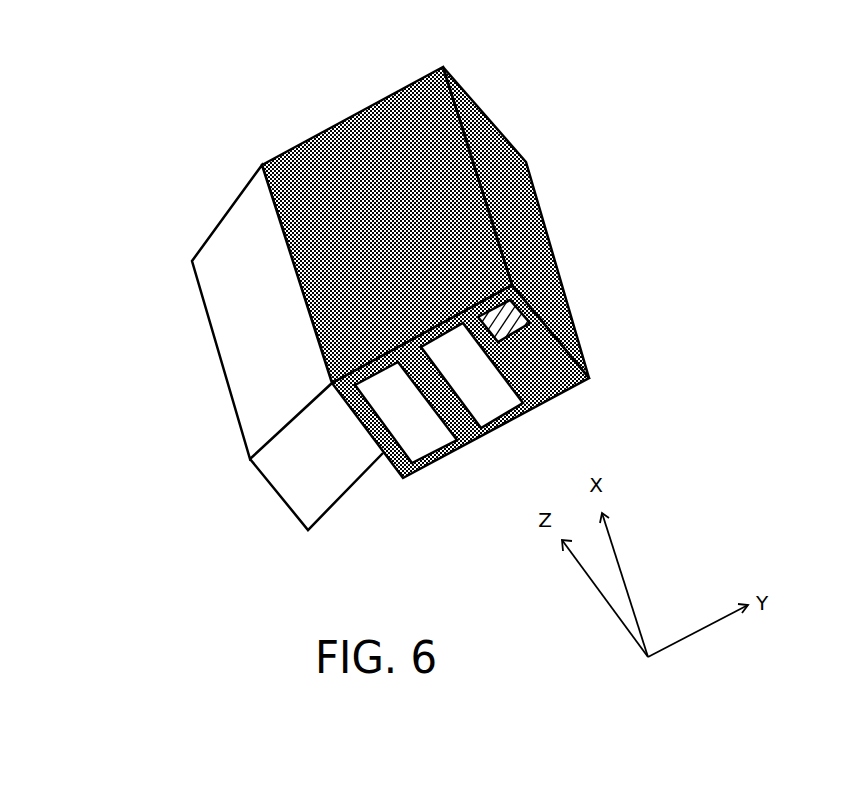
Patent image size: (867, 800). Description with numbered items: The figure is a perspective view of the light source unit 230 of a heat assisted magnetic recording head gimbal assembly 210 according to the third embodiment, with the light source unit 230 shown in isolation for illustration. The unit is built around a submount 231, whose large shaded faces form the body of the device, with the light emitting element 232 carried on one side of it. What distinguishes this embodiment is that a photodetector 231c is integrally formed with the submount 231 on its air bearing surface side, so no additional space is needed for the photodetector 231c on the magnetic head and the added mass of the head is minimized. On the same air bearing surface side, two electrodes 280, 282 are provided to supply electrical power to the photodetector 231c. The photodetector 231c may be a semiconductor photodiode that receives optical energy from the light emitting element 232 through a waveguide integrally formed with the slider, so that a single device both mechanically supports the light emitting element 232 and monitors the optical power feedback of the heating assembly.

The head gimbal assembly 210 is at (97, 44).
The light source unit 230 is at (278, 90).
The submount 231 is at (429, 218).
The photodetector 231c is at (505, 319).
The light emitting element 232 is at (277, 304).
The electrode 280 is at (494, 394).
The electrode 282 is at (422, 422).